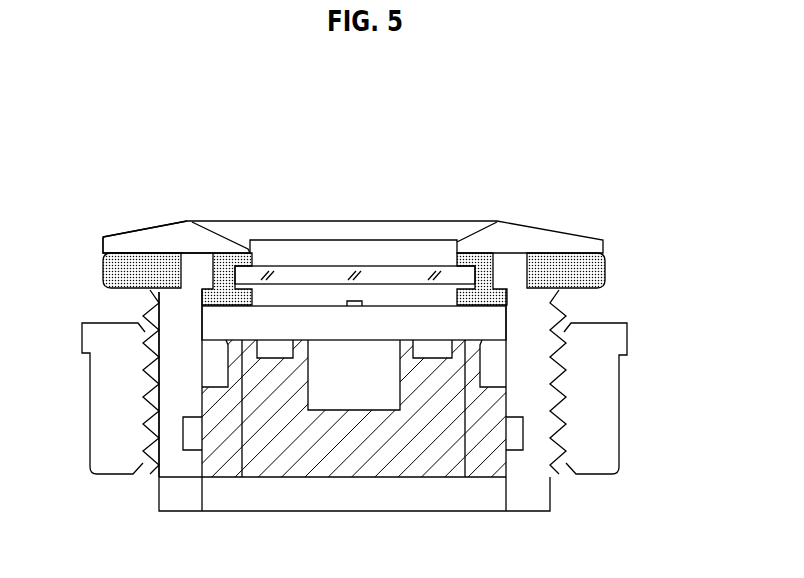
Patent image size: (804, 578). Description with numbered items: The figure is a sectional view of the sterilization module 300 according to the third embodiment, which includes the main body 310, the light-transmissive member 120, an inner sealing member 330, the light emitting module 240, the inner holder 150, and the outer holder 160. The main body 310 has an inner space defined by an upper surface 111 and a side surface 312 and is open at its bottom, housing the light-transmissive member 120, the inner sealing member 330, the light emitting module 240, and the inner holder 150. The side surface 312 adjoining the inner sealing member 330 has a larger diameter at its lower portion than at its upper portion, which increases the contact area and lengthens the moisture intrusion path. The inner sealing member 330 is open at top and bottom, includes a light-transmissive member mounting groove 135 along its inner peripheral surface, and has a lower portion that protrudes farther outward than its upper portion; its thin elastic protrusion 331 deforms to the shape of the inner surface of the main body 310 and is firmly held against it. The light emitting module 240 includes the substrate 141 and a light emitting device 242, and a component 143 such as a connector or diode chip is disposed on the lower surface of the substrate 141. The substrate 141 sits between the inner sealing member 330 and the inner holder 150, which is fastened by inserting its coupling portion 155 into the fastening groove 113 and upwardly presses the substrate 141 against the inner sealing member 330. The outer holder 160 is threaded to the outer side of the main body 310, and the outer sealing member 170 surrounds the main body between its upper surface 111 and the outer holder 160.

The sterilization module 300 is at (40, 133).
The main body 310 is at (520, 178).
The upper surface 111 is at (567, 240).
The side surface 312 is at (517, 300).
The light-transmissive member mounting groove 135 is at (217, 252).
The inner sealing member 330 is at (248, 248).
The outer sealing member 170 is at (602, 272).
The light-transmissive member 120 is at (432, 274).
The light emitting module 240 is at (393, 175).
The substrate 141 is at (292, 330).
The light emitting device 242 is at (351, 300).
The component 143 is at (384, 348).
The inner holder 150 is at (292, 463).
The coupling portion 155 is at (187, 432).
The protrusion 331 is at (152, 294).
The fastening groove 113 is at (152, 470).
The outer holder 160 is at (608, 403).